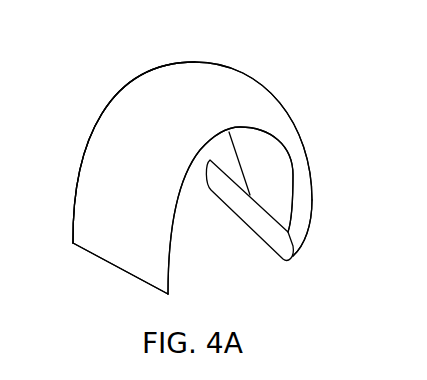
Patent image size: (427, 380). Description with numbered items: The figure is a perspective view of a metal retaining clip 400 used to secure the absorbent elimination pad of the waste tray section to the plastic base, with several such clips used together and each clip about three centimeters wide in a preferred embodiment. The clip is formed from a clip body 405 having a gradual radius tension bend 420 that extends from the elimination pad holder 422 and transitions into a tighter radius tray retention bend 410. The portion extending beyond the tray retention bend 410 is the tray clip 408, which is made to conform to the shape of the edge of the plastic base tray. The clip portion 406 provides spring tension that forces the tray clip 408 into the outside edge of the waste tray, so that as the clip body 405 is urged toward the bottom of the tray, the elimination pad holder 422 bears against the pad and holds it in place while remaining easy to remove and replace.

The metal retaining clip 400 is at (292, 90).
The clip body 405 is at (105, 140).
The clip portion 406 is at (280, 193).
The tray clip 408 is at (257, 227).
The tray retention bend 410 is at (282, 248).
The gradual radius tension bend 420 is at (88, 94).
The elimination pad holder 422 is at (117, 253).